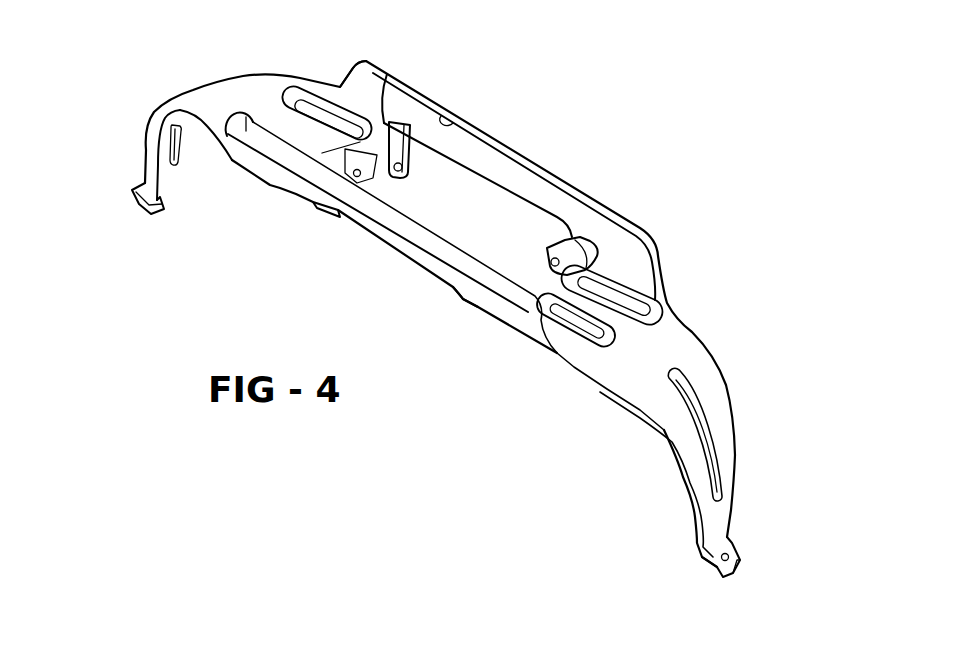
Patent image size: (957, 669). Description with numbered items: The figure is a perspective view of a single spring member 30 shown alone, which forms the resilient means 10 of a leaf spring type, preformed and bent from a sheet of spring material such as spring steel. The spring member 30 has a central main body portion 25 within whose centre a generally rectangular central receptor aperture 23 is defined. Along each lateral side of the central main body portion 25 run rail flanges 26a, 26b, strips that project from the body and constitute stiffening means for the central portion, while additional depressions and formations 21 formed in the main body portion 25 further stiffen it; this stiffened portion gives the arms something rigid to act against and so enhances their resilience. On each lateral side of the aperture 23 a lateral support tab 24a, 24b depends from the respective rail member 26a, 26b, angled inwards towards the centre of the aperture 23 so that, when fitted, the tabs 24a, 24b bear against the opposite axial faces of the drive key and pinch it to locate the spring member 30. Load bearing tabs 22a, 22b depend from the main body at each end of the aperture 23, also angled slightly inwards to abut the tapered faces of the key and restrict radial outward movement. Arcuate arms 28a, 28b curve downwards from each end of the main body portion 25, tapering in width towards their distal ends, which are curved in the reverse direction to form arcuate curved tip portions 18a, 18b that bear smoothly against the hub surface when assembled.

The resilient means 10 is at (690, 182).
The arcuate curved tip portion 18a is at (135, 206).
The arcuate curved tip portion 18b is at (741, 562).
The depressions and formations 21 is at (262, 118).
The load bearing tab 22a is at (384, 77).
The load bearing tab 22b is at (598, 293).
The central receptor aperture 23 is at (456, 213).
The lateral support tab 24a is at (410, 162).
The lateral support tab 24b is at (337, 217).
The central main body portion 25 is at (386, 252).
The rail flange 26a is at (258, 162).
The rail flange 26b is at (447, 123).
The arcuate arm 28a is at (217, 89).
The arcuate arm 28b is at (728, 393).
The resilient spring member 30 is at (463, 320).